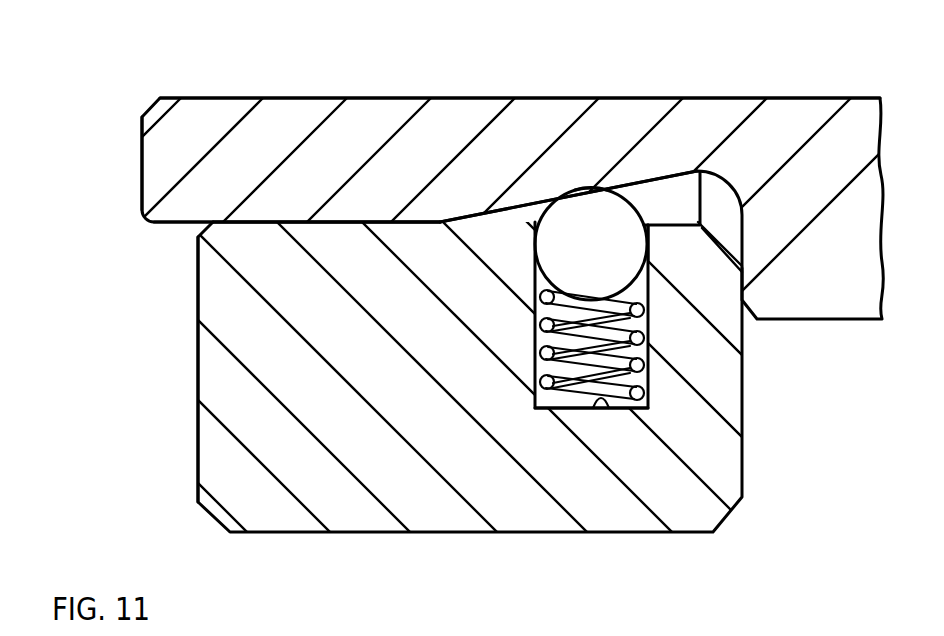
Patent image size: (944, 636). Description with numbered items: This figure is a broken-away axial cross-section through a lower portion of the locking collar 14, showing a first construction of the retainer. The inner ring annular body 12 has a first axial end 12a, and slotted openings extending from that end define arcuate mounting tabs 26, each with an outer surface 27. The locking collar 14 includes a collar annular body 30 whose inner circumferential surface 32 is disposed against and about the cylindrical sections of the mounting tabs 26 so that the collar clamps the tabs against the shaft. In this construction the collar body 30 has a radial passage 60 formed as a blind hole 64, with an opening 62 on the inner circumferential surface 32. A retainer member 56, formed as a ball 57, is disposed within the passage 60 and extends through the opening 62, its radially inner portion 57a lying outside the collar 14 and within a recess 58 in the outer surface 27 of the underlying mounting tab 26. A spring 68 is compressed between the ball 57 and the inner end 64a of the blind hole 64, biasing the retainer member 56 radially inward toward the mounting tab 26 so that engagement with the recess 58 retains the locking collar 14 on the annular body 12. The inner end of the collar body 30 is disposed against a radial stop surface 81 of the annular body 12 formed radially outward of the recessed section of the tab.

The annular body 12 is at (856, 350).
The first axial end 12a is at (141, 152).
The mounting tab 26 is at (378, 91).
The inner circumferential surface 32 is at (386, 222).
The retainer member 56 is at (594, 186).
The recess 58 is at (663, 190).
The ball 57 is at (560, 250).
The radially inner portion 57a is at (576, 203).
The outer surface 27 is at (332, 233).
The opening 62 is at (645, 208).
The blind hole 64 is at (537, 324).
The spring 68 is at (651, 337).
The locking collar 14 is at (157, 363).
The collar annular body 30 is at (189, 427).
The radial stop surface 81 is at (733, 278).
The radial passage 60 is at (566, 417).
The inner end 64a is at (614, 404).